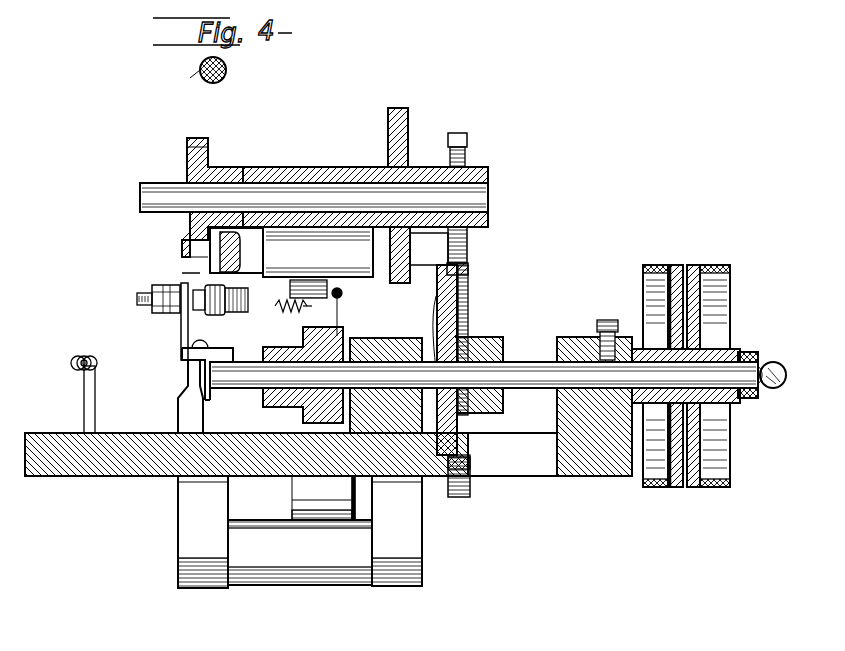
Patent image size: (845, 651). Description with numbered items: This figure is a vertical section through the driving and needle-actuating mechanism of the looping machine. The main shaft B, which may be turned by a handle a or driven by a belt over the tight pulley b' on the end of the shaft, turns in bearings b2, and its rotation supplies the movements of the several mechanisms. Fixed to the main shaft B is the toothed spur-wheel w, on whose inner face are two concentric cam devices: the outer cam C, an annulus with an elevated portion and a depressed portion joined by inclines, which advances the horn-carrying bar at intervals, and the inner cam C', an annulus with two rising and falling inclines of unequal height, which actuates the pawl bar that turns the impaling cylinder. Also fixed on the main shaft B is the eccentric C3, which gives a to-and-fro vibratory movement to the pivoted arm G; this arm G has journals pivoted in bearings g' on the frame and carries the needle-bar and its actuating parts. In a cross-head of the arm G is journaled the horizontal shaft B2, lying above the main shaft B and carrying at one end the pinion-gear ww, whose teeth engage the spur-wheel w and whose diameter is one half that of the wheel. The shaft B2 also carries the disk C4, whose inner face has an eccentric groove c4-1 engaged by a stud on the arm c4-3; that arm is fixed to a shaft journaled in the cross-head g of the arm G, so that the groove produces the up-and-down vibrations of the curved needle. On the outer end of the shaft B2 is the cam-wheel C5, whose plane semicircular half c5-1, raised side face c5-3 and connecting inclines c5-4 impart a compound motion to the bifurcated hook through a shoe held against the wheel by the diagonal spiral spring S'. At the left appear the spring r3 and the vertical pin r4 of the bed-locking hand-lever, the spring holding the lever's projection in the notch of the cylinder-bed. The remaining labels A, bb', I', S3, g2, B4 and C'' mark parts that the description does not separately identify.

The bed / base A is at (106, 470).
The pivoted arm G is at (300, 494).
The bearings g' is at (292, 532).
The cross-head g is at (254, 252).
The ball stem g2 is at (182, 81).
The main shaft B is at (205, 372).
The horizontal shaft B2 is at (488, 190).
The ball B4 is at (226, 70).
The handle a is at (794, 372).
The bearings b2 is at (378, 340).
The disc bb' is at (663, 364).
The tight pulley b' is at (708, 364).
The cam device C is at (470, 360).
The cam device C' is at (457, 341).
The wire C'' is at (420, 338).
The cam or eccentric C3 is at (305, 408).
The disk C4 is at (365, 185).
The eccentric groove c4-1 is at (388, 152).
The arm c4-3 is at (380, 244).
The cam-wheel C5 is at (212, 187).
The plane semicircular half c5-1 is at (187, 147).
The raised side face c5-3 is at (182, 257).
The inclines c5-4 is at (188, 236).
The lever I' is at (194, 267).
The spiral spring S' is at (281, 317).
The screw S3 is at (337, 300).
The spring r3 is at (70, 358).
The vertical pin r4 is at (86, 392).
The toothed spur-wheel w is at (462, 498).
The pinion-gear ww is at (456, 133).